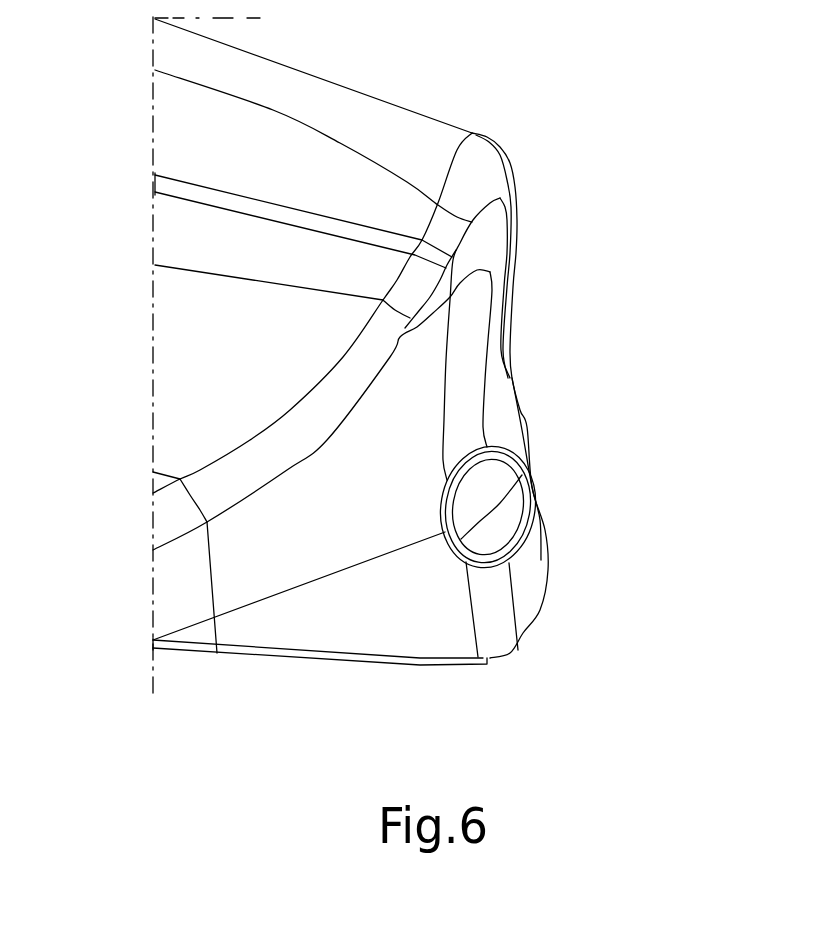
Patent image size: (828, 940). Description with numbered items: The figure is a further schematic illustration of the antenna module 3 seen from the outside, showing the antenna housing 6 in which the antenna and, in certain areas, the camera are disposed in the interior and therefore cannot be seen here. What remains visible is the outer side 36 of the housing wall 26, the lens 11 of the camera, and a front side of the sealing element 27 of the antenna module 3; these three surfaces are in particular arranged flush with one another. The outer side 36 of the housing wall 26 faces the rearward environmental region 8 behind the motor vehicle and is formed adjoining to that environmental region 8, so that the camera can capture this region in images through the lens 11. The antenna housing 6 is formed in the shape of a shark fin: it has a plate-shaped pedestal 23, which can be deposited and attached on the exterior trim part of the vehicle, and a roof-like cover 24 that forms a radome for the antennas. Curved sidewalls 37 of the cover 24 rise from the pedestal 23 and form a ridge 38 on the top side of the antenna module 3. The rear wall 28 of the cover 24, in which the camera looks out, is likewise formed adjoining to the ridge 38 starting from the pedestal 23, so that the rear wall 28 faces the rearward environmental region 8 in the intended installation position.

The antenna module 3 is at (587, 148).
The antenna housing 6 is at (594, 238).
The environmental region 8 is at (628, 328).
The lens 11 is at (535, 503).
The plate-shaped pedestal 23 is at (444, 668).
The roof-like cover 24 is at (505, 129).
The housing wall 26 is at (492, 393).
The sealing element 27 is at (503, 447).
The rear wall 28 is at (523, 600).
The outer side 36 is at (482, 304).
The curved sidewalls 37 is at (170, 363).
The ridge 38 is at (353, 90).